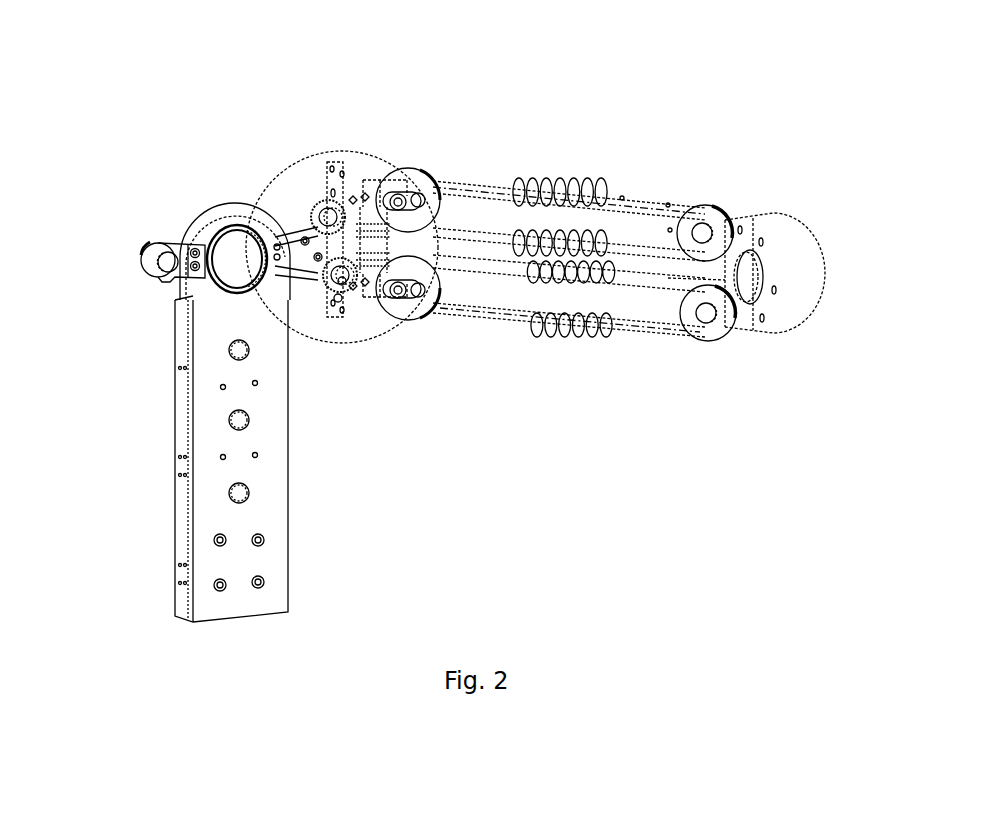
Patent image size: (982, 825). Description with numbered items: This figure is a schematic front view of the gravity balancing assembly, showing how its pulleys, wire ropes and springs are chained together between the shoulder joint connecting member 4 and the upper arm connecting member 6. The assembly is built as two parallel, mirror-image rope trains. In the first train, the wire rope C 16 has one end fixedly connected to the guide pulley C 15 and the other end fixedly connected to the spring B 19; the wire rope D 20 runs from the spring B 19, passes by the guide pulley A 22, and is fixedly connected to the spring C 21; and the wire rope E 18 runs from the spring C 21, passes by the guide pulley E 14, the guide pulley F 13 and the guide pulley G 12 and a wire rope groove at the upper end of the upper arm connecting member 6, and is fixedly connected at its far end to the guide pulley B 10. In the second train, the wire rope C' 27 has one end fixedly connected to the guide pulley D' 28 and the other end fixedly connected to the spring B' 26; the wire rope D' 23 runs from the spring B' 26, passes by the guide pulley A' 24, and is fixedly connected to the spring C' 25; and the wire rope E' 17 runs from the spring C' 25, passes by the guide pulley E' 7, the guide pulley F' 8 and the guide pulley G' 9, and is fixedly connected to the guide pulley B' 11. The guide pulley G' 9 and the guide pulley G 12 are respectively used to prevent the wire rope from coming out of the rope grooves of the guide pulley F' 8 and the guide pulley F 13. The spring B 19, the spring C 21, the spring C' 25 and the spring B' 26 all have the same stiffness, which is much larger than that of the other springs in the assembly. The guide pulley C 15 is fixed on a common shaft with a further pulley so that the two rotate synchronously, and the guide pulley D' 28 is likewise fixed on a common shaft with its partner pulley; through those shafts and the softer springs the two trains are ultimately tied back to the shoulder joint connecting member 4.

The shoulder joint connecting member 4 is at (795, 236).
The upper arm connecting member 6 is at (182, 550).
The guide pulley E' 7 is at (336, 300).
The guide pulley F' 8 is at (338, 282).
The guide pulley G' 9 is at (330, 273).
The guide pulley B 10 is at (152, 248).
The guide pulley B' 11 is at (305, 237).
The guide pulley G 12 is at (300, 228).
The guide pulley F 13 is at (330, 208).
The guide pulley E 14 is at (372, 236).
The guide pulley C 15 is at (389, 184).
The wire rope C 16 is at (435, 178).
The wire rope E' 17 is at (450, 257).
The wire rope E 18 is at (483, 237).
The spring B 19 is at (573, 180).
The wire rope D 20 is at (623, 196).
The spring C 21 is at (610, 237).
The guide pulley A 22 is at (714, 212).
The wire rope D' 23 is at (669, 280).
The guide pulley A' 24 is at (723, 321).
The spring C' 25 is at (596, 284).
The spring B' 26 is at (597, 334).
The wire rope C' 27 is at (475, 322).
The guide pulley D' 28 is at (410, 313).